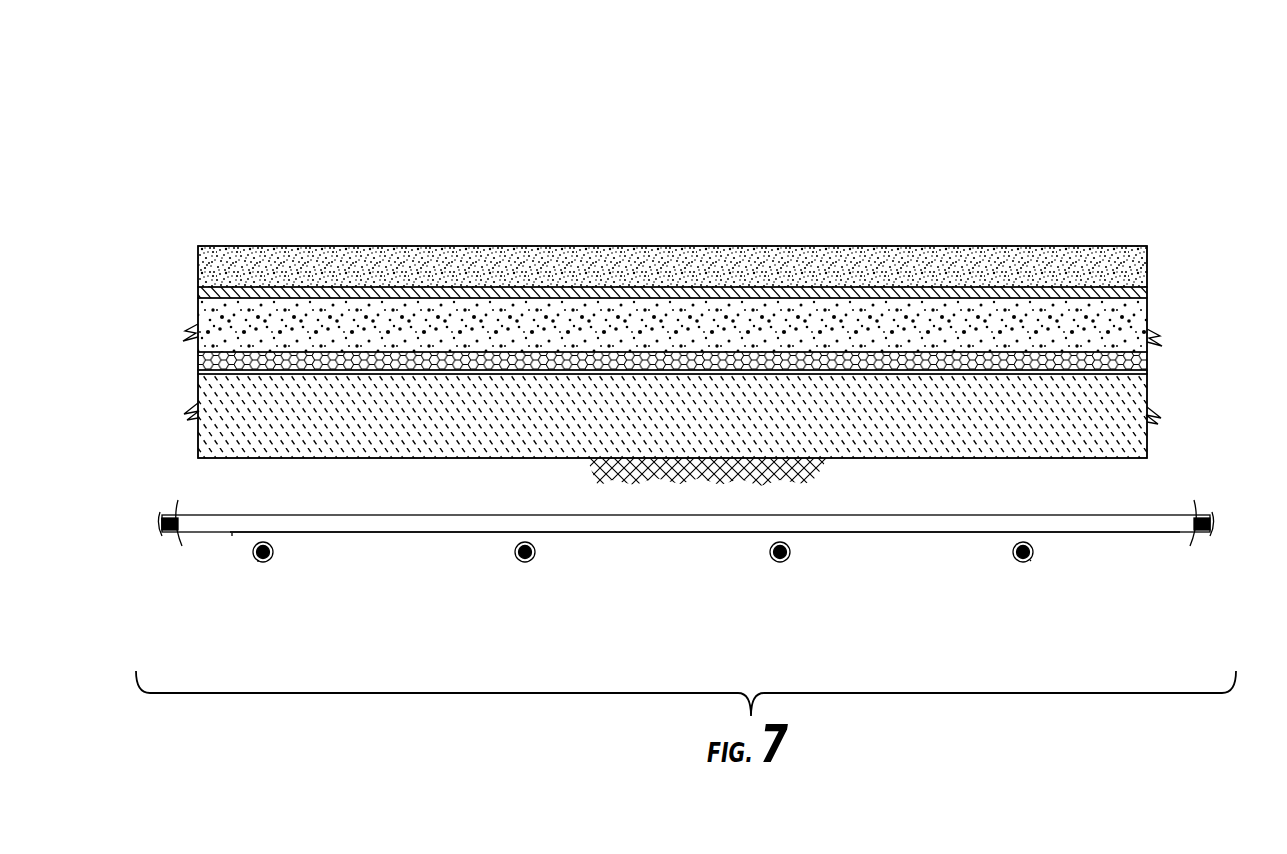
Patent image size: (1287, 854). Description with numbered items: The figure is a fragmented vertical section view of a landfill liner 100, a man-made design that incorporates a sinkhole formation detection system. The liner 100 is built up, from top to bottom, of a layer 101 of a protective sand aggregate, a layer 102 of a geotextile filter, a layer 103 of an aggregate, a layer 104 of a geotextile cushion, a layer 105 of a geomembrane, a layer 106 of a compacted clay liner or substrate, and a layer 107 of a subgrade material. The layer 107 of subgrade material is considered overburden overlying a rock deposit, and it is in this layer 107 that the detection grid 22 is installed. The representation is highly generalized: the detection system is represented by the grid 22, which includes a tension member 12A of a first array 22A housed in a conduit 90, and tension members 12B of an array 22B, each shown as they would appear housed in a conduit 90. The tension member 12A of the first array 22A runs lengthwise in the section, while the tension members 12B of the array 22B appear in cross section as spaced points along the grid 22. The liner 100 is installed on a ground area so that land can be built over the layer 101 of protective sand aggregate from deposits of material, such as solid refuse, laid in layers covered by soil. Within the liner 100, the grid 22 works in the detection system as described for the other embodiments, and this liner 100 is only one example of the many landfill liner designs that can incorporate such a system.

The landfill liner 100 is at (1141, 172).
The layer of protective sand aggregate 101 is at (938, 262).
The layer of geotextile filter 102 is at (781, 292).
The layer of aggregate 103 is at (490, 300).
The layer of geotextile cushion 104 is at (325, 362).
The layer of geomembrane 105 is at (1093, 368).
The layer of compacted clay liner 106 is at (226, 424).
The layer of subgrade material 107 is at (597, 468).
The grid 22 is at (1096, 513).
The first array 22A is at (881, 534).
The array 22B is at (1034, 564).
The tension member 12A is at (172, 537).
The tension members 12B is at (268, 560).
The conduit 90 is at (232, 536).